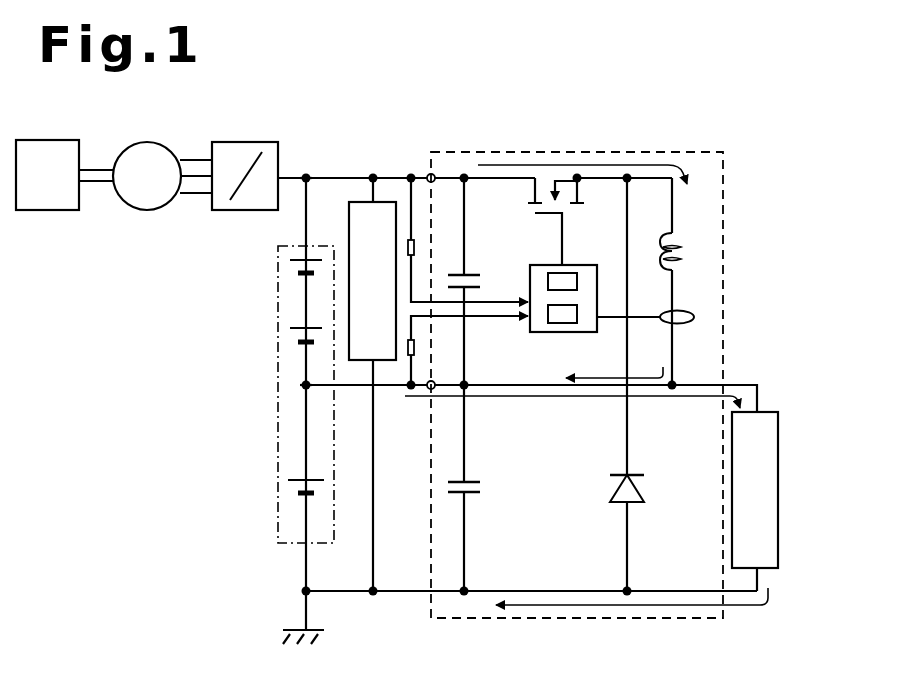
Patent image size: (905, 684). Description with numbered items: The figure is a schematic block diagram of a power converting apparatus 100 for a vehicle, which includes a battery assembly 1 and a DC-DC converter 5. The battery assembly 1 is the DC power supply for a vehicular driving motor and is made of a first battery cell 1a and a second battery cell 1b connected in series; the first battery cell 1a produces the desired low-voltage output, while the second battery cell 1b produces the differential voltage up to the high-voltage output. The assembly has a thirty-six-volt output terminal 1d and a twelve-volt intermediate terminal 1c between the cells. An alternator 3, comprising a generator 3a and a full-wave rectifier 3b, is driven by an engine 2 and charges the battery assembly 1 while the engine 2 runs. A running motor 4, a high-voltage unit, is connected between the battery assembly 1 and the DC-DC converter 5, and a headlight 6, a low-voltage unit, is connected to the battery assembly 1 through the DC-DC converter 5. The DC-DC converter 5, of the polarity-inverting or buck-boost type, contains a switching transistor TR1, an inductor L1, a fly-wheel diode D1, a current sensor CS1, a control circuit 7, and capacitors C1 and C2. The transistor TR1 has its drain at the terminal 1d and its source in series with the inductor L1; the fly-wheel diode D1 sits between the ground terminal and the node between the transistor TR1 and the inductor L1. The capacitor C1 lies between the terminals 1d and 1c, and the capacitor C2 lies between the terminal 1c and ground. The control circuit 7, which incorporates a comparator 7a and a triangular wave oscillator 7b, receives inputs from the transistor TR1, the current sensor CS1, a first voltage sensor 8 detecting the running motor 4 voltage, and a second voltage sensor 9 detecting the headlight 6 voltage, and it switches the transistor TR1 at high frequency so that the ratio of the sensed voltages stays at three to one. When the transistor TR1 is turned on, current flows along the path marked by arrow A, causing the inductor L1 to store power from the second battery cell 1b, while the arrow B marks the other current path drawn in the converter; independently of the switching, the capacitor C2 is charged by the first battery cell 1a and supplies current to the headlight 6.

The power converting apparatus 100 is at (722, 122).
The battery assembly 1 is at (268, 351).
The first battery cell 1a is at (306, 512).
The second battery cell 1b is at (306, 305).
The intermediate terminal 1c is at (306, 385).
The 36-V output terminal 1d is at (306, 172).
The engine 2 is at (52, 210).
The alternator 3 is at (195, 226).
The generator 3a is at (143, 210).
The full-wave rectifier 3b is at (215, 210).
The running motor 4 is at (349, 218).
The DC-DC converter 5 is at (727, 196).
The headlight 6 is at (778, 422).
The control circuit 7 is at (543, 303).
The comparator 7a is at (562, 270).
The triangular wave oscillator 7b is at (558, 332).
The first voltage sensor 8 is at (415, 248).
The second voltage sensor 9 is at (415, 347).
The transistor TR1 is at (529, 221).
The capacitor C1 is at (470, 278).
The capacitor C2 is at (470, 482).
The fly-wheel diode D1 is at (640, 485).
The inductor L1 is at (681, 240).
The current sensor CS1 is at (690, 312).
The arrow A is at (645, 164).
The arrow B is at (582, 397).